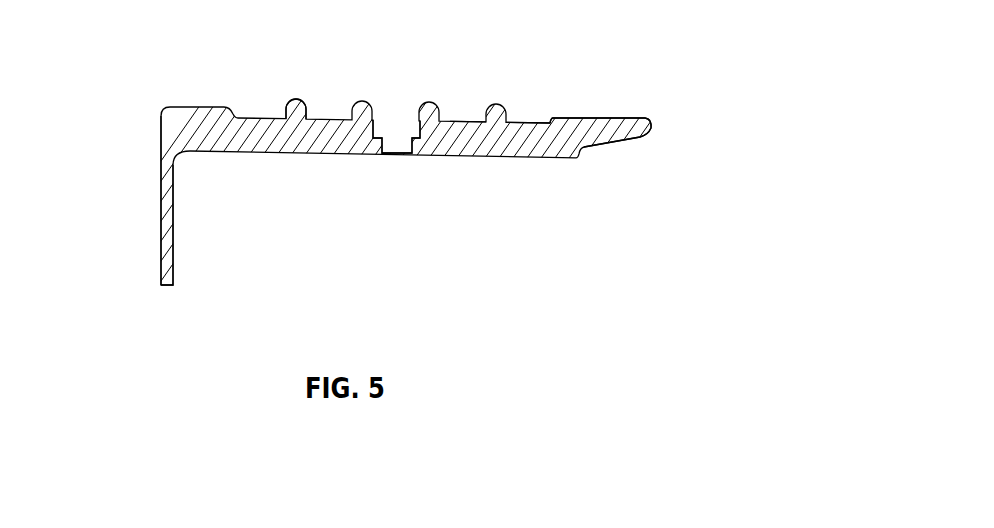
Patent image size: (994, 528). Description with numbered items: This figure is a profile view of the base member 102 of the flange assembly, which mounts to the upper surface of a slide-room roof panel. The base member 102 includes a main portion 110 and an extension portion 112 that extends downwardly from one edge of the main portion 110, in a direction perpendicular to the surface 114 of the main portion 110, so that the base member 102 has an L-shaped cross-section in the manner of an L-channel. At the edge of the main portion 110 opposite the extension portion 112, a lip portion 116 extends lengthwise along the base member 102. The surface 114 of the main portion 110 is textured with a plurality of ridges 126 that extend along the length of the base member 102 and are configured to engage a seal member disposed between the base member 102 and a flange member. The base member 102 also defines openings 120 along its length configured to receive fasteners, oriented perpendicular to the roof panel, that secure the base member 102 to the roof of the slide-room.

The base member 102 is at (333, 119).
The main portion 110 is at (462, 122).
The extension portion 112 is at (160, 200).
The surface 114 is at (525, 123).
The lip portion 116 is at (602, 118).
The openings 120 is at (410, 121).
The ridges 126 is at (289, 100).